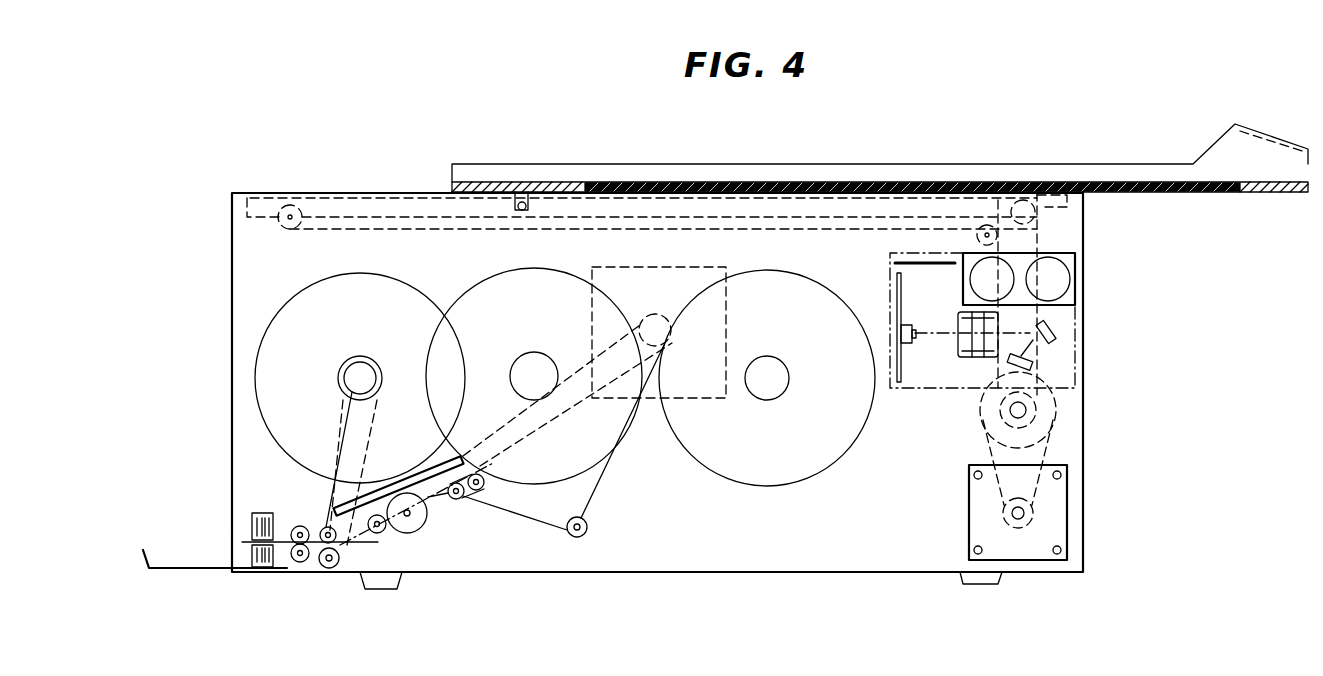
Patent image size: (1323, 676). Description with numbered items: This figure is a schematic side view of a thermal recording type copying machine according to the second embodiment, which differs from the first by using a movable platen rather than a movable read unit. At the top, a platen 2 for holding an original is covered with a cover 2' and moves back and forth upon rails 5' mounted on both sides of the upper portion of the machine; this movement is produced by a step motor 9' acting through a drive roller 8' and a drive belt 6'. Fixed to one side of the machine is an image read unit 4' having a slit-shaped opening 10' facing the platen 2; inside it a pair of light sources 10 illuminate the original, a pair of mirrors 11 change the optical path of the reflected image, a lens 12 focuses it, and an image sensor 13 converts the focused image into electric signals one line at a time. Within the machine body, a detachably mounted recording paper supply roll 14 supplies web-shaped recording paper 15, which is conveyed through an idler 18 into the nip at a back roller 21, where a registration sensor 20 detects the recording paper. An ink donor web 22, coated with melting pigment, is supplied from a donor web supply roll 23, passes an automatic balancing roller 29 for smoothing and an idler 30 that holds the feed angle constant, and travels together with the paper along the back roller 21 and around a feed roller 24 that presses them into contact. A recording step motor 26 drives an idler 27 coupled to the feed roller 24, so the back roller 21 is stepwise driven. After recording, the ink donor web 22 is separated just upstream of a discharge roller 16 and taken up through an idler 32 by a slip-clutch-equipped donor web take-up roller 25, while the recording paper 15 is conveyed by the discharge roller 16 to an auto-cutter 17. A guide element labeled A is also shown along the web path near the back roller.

The platen 2 is at (880, 162).
The cover 2' is at (880, 155).
The image read unit 4' is at (1010, 320).
The rails 5' is at (1083, 209).
The drive belt 6' is at (1053, 225).
The drive roller 8' is at (1052, 450).
The step motor 9' is at (1047, 506).
The light sources 10 is at (1027, 265).
The slit-shaped opening 10' is at (1001, 257).
The mirrors 11 is at (1030, 365).
The lens 12 is at (962, 350).
The image sensor 13 is at (908, 322).
The recording paper supply roll 14 is at (853, 442).
The web-shaped recording paper 15 is at (615, 478).
The discharge roller 16 is at (299, 563).
The auto-cutter 17 is at (263, 512).
The idler 18 is at (589, 530).
The registration sensor 20 is at (1048, 330).
The back roller 21 is at (425, 522).
The ink donor web 22 is at (490, 463).
The donor web supply roll 23 is at (510, 270).
The feed roller 24 is at (381, 533).
The donor web take-up roller 25 is at (409, 285).
The recording step motor 26 is at (665, 267).
The idler 27 is at (331, 569).
The automatic balancing roller 29 is at (484, 487).
The idler 30 is at (461, 499).
The idler 32 is at (323, 528).
The guide plate A is at (387, 478).